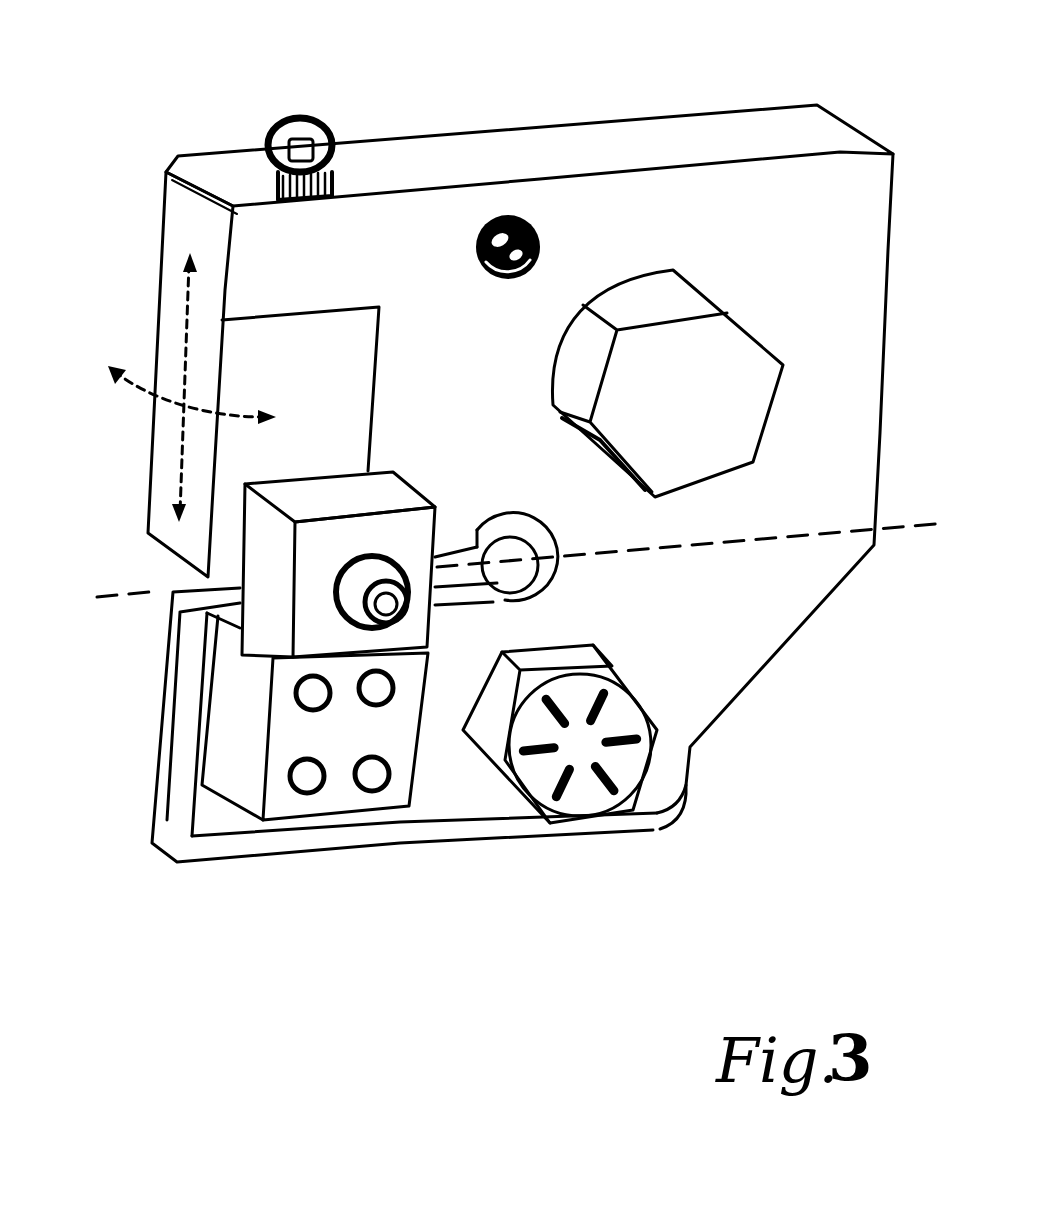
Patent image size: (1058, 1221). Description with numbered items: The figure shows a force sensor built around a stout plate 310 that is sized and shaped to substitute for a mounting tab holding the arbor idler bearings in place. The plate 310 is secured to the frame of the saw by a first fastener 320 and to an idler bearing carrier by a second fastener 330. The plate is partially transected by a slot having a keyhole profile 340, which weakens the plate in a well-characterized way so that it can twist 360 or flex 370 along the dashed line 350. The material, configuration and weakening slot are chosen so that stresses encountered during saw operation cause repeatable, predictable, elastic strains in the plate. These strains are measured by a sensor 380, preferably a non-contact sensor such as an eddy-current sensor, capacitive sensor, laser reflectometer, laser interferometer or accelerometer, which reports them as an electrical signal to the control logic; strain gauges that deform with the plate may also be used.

The stout plate 310 is at (719, 103).
The first fastener 320 is at (735, 306).
The second fastener 330 is at (643, 688).
The slot having a keyhole profile 340 is at (518, 512).
The dashed line 350 is at (131, 595).
The twist 360 is at (171, 382).
The flex 370 is at (195, 376).
The sensor 380 is at (356, 798).